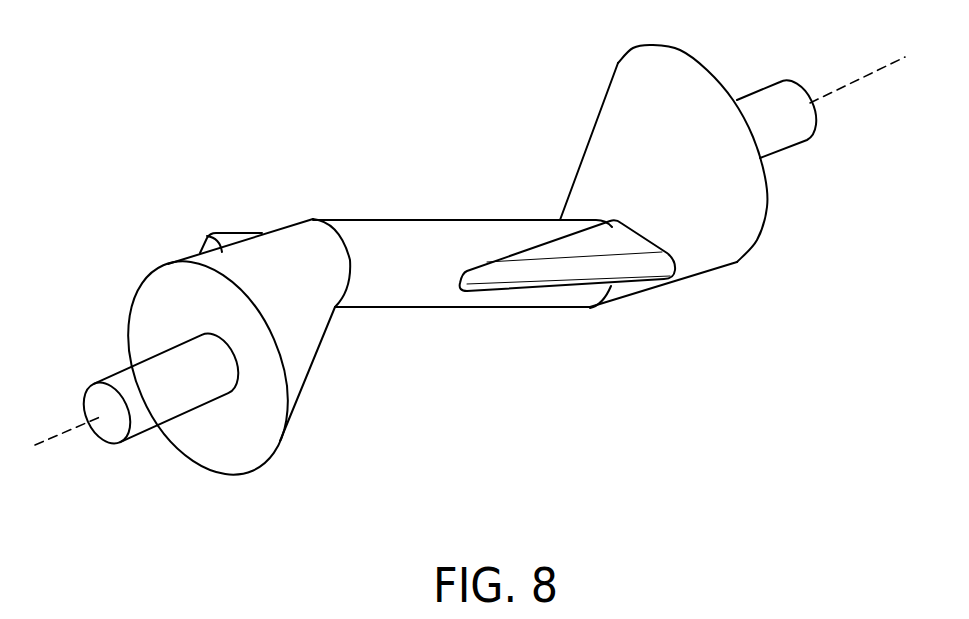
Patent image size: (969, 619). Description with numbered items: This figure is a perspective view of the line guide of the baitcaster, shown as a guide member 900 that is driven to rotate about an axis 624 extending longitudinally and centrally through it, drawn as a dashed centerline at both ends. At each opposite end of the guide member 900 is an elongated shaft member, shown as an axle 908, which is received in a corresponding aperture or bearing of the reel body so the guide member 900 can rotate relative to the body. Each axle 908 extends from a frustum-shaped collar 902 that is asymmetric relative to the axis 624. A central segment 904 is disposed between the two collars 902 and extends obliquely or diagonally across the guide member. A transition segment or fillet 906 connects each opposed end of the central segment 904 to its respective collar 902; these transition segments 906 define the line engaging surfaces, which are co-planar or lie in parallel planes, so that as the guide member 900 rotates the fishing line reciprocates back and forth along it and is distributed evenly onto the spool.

The guide member 900 is at (350, 128).
The frustum-shaped collar 902 is at (300, 348).
The central segment 904 is at (438, 300).
The transition segment 906 is at (238, 233).
The axle 908 is at (98, 403).
The axis 624 is at (840, 87).